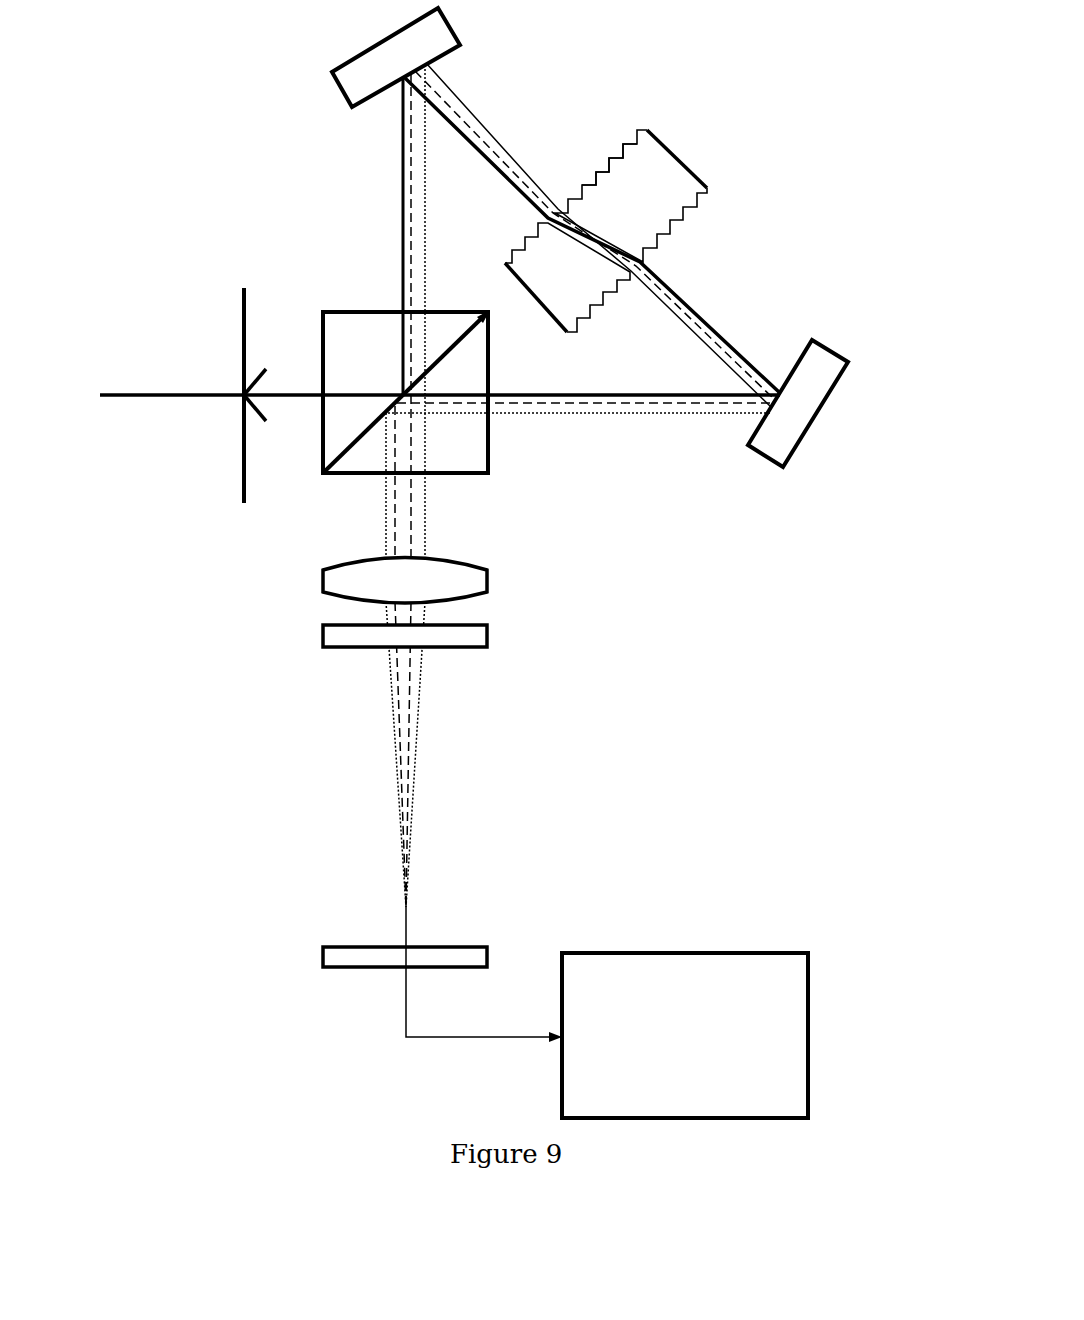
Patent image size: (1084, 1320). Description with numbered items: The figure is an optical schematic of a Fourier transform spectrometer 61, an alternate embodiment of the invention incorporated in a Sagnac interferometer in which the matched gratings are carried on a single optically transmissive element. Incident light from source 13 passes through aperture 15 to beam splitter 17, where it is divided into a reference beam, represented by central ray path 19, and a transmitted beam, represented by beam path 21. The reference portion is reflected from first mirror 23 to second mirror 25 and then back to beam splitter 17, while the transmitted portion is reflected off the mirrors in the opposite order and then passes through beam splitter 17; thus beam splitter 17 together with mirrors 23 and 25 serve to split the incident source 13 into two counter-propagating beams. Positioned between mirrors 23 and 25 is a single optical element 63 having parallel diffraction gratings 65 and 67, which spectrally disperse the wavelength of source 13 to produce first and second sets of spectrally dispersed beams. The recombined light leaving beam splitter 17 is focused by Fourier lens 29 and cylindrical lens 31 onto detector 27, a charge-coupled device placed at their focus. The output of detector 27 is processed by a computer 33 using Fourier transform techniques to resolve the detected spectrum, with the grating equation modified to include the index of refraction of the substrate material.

The source 13 is at (212, 393).
The aperture 15 is at (244, 318).
The beam splitter 17 is at (323, 458).
The central ray path 19 is at (402, 298).
The beam path 21 is at (567, 396).
The first mirror 23 is at (345, 64).
The second mirror 25 is at (818, 414).
The detector 27 is at (323, 955).
The Fourier lens 29 is at (323, 580).
The cylindrical lens 31 is at (323, 633).
The computer 33 is at (685, 952).
The Fourier transform spectrometer 61 is at (592, 628).
The single optical element 63 is at (665, 143).
The diffraction grating 65 is at (675, 232).
The diffraction grating 67 is at (603, 160).